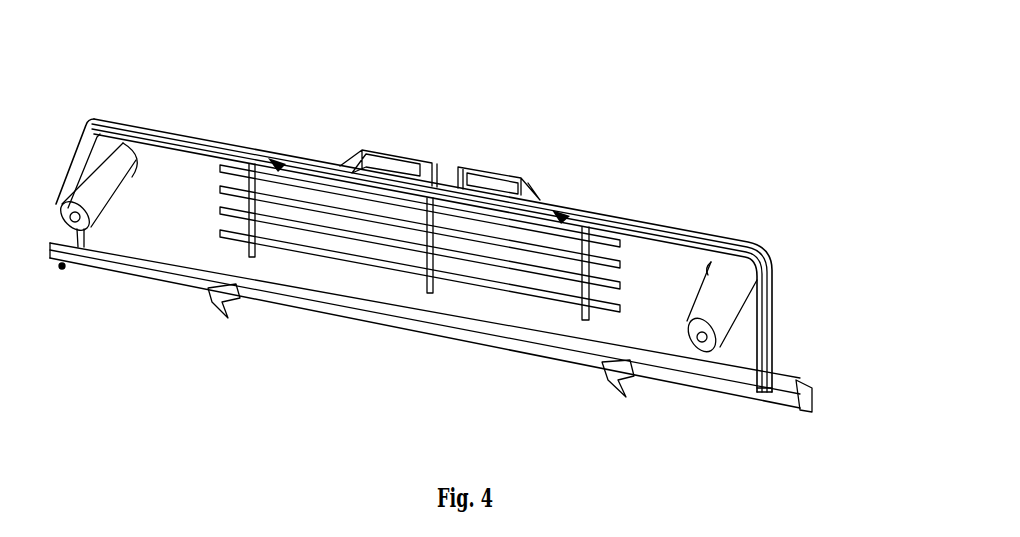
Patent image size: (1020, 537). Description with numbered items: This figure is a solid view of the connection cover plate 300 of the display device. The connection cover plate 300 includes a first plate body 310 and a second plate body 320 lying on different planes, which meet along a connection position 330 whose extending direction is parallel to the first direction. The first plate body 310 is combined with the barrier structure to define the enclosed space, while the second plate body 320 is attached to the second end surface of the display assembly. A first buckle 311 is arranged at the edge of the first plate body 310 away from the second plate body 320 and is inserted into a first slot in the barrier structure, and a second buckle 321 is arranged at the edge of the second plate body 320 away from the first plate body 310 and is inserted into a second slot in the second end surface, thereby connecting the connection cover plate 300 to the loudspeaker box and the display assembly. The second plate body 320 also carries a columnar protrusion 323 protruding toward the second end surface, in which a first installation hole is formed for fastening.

The connection cover plate 300 is at (463, 255).
The first plate body 310 is at (793, 393).
The first buckle 311 is at (800, 405).
The second plate body 320 is at (188, 172).
The second buckle 321 is at (275, 163).
The columnar protrusion 323 is at (693, 313).
The connection position 330 is at (768, 375).